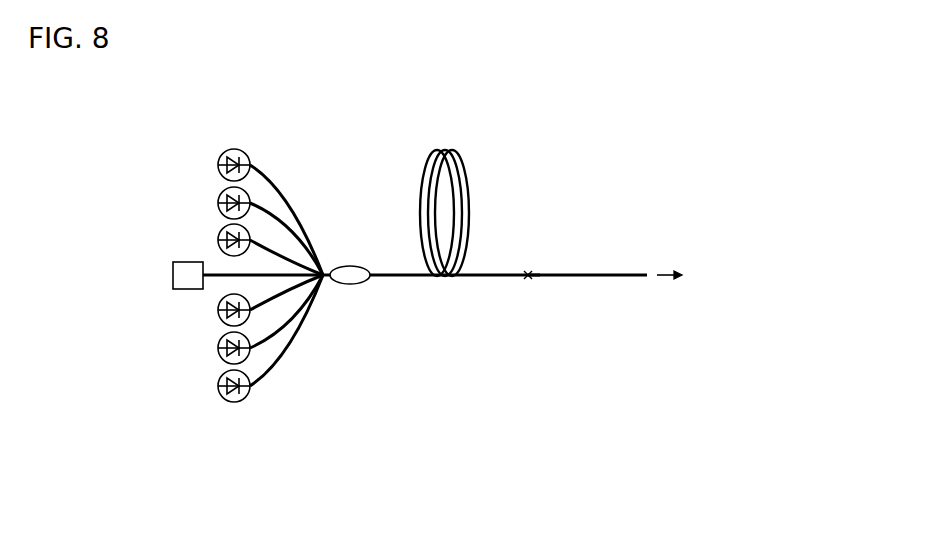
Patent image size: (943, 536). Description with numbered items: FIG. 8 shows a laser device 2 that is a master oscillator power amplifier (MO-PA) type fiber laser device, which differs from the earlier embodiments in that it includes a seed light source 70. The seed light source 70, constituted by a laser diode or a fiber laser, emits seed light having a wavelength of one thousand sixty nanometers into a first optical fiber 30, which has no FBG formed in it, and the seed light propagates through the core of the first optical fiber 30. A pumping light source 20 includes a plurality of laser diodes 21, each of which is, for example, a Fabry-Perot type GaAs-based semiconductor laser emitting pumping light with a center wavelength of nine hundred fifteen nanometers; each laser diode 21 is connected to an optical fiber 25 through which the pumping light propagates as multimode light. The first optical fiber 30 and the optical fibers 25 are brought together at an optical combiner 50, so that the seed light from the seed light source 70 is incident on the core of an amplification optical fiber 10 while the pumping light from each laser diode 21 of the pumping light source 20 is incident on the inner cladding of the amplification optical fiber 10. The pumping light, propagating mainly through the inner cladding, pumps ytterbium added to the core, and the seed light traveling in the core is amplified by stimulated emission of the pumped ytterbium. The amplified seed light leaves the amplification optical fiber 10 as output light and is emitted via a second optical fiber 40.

The laser device 2 is at (549, 134).
The amplification optical fiber 10 is at (460, 275).
The pumping light source 20 is at (213, 134).
The laser diode 21 is at (222, 154).
The optical fiber 25 is at (262, 174).
The first optical fiber 30 is at (208, 273).
The second optical fiber 40 is at (603, 275).
The optical combiner 50 is at (360, 283).
The seed light source 70 is at (173, 277).